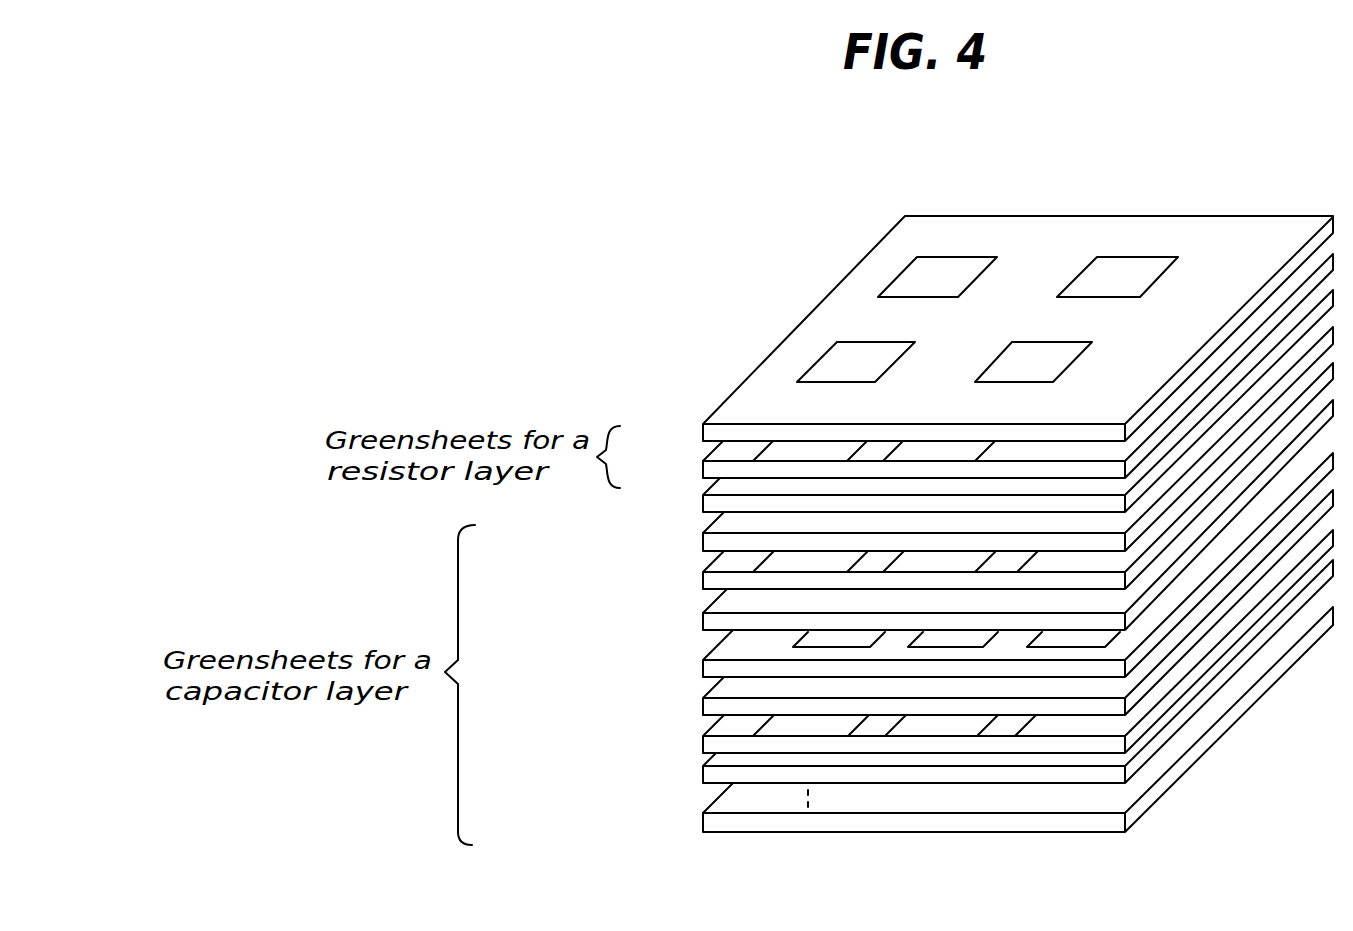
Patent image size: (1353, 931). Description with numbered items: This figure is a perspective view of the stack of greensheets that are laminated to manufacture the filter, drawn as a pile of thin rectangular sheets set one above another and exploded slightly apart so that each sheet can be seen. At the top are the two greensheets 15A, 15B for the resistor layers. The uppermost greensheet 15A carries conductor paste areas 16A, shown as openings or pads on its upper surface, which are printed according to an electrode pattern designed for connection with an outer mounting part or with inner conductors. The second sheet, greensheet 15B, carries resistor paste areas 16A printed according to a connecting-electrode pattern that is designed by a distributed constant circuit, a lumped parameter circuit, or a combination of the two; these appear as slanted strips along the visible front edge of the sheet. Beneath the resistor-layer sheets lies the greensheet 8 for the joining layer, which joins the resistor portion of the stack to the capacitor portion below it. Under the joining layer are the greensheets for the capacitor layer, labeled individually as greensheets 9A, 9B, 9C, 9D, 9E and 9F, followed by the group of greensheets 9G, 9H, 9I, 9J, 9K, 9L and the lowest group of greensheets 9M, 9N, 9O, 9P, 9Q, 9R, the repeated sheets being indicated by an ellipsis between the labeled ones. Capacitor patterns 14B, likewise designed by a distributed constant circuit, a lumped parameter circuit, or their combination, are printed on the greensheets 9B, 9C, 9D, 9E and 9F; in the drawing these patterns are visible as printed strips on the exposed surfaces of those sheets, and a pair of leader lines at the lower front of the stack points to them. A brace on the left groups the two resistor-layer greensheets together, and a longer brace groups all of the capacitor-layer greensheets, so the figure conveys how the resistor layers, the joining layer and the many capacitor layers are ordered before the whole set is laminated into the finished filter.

The greensheet for resistor layer 15A is at (976, 334).
The greensheet for resistor layer 15B is at (708, 475).
The conductor paste areas 16A is at (822, 365).
The greensheet for joining layer 8 is at (708, 505).
The greensheet for capacitor layer 9A is at (708, 537).
The greensheet for capacitor layer 9B is at (708, 582).
The greensheet for capacitor layer 9C is at (708, 622).
The greensheet for capacitor layer 9D is at (708, 665).
The greensheet for capacitor layer 9E is at (708, 702).
The greensheet for capacitor layer 9F is at (981, 703).
The greensheet for capacitor layer 9G is at (899, 682).
The greensheet for capacitor layer 9H is at (899, 682).
The greensheet for capacitor layer 9I is at (899, 682).
The greensheet for capacitor layer 9J is at (899, 682).
The greensheet for capacitor layer 9K is at (899, 682).
The greensheet for capacitor layer 9L is at (708, 775).
The greensheet for capacitor layer 9M is at (900, 721).
The greensheet for capacitor layer 9N is at (900, 721).
The greensheet for capacitor layer 9O is at (900, 721).
The greensheet for capacitor layer 9P is at (900, 721).
The greensheet for capacitor layer 9Q is at (900, 721).
The greensheet for capacitor layer 9R is at (708, 822).
The capacitor patterns 14B is at (920, 735).